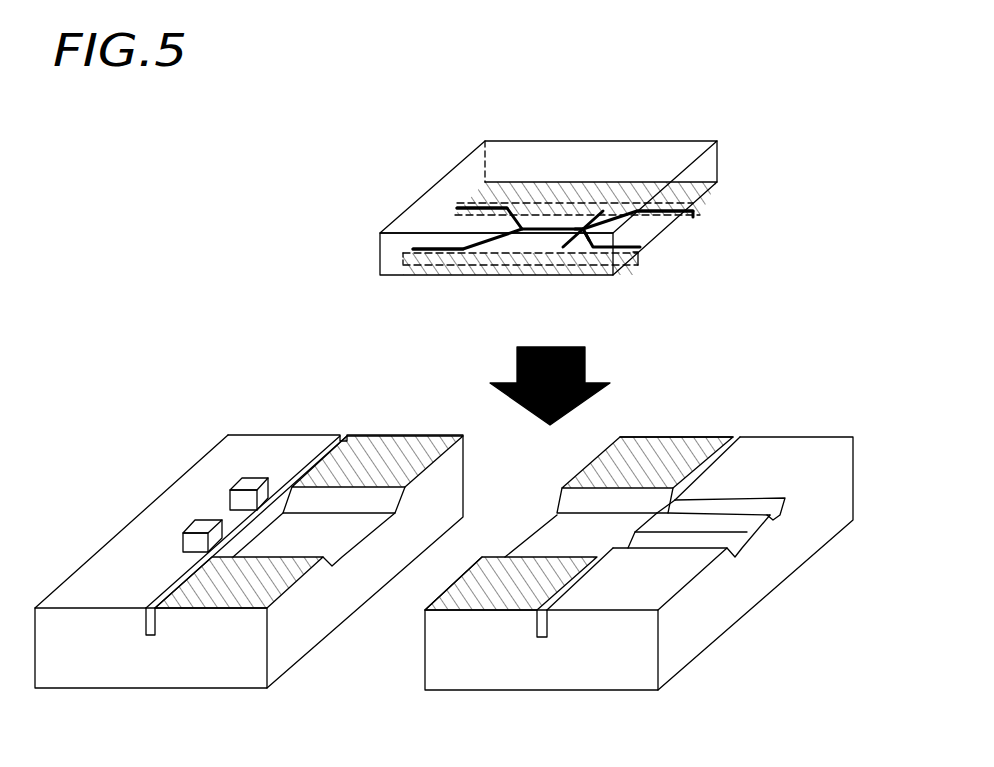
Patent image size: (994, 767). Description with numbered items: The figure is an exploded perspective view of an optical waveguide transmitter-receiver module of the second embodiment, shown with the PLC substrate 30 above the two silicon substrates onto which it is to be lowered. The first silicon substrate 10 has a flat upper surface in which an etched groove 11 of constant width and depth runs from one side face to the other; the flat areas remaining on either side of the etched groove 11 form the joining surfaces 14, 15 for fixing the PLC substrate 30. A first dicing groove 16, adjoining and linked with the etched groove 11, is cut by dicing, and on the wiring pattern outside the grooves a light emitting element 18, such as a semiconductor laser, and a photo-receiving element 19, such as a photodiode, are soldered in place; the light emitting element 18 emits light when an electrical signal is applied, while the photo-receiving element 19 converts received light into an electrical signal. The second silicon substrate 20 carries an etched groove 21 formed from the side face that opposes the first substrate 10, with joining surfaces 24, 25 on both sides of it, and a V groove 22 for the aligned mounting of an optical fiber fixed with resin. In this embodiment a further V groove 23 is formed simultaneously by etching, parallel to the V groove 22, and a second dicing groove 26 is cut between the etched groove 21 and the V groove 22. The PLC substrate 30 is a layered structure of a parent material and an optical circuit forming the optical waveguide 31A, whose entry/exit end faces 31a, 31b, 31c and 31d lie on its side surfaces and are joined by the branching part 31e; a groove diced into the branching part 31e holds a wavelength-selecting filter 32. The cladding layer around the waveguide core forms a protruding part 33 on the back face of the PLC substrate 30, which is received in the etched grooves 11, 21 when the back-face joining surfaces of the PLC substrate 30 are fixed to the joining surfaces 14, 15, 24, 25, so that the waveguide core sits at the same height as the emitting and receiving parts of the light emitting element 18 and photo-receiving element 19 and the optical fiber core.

The first silicon substrate 10 is at (53, 675).
The etched groove 11 is at (335, 545).
The joining surface 14 is at (210, 602).
The joining surface 15 is at (384, 450).
The first dicing groove 16 is at (150, 637).
The light emitting element 18 is at (196, 526).
The photo-receiving element 19 is at (248, 480).
The second silicon substrate 20 is at (608, 677).
The etched groove 21 is at (560, 537).
The V groove 22 is at (738, 553).
The V groove 23 is at (783, 518).
The joining surface 24 is at (462, 602).
The joining surface 25 is at (672, 447).
The second dicing groove 26 is at (539, 639).
The PLC substrate 30 is at (675, 158).
The optical waveguide 31A is at (533, 218).
The entry/exit end face 31a is at (413, 247).
The entry/exit end face 31b is at (457, 205).
The entry/exit end face 31c is at (641, 249).
The entry/exit end face 31d is at (695, 211).
The branching part 31e is at (584, 233).
The wavelength-selecting filter 32 is at (603, 210).
The protruding part 33 is at (687, 234).